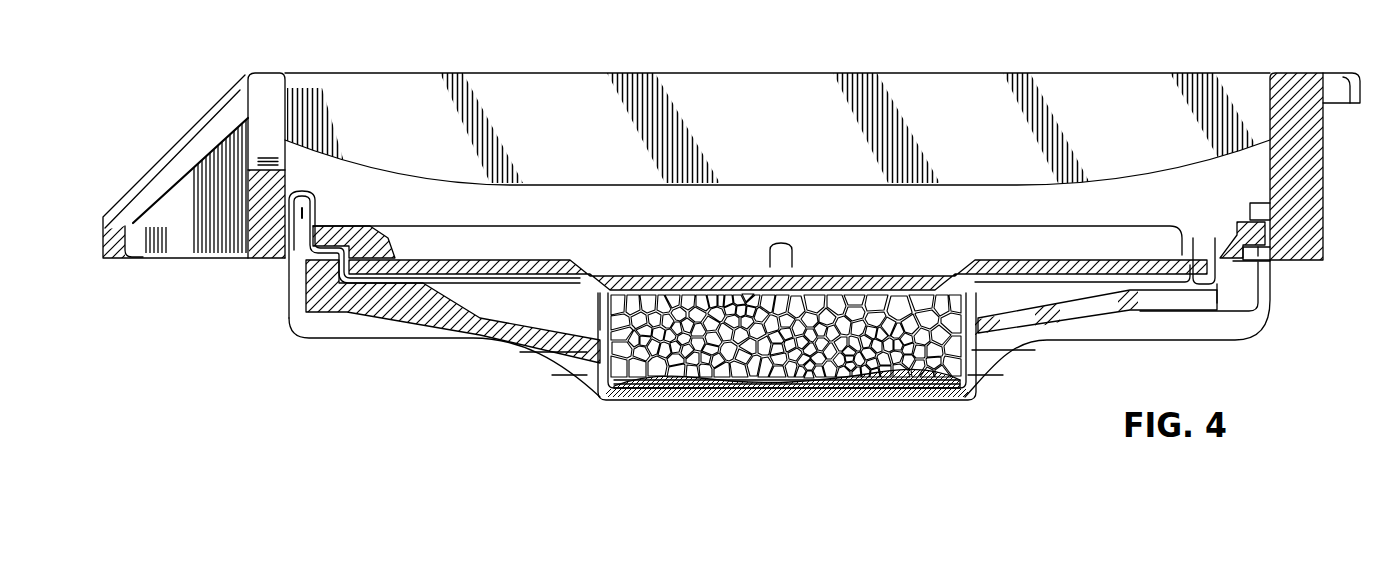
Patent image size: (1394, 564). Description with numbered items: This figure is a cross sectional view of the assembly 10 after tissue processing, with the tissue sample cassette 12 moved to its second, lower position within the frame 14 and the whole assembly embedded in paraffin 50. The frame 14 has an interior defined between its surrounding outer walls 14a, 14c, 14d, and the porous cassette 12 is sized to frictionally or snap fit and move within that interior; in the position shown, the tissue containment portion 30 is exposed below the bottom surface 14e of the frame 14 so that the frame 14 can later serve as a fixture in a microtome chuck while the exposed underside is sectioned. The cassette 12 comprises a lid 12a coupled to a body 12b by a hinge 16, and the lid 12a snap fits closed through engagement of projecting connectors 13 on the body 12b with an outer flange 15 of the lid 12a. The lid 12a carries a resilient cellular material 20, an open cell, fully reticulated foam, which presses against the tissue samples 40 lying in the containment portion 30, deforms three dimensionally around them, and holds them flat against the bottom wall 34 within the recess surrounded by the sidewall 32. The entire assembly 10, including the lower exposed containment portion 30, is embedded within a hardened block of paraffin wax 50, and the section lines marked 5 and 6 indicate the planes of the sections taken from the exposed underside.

The assembly 10 is at (1340, 50).
The tissue sample cassette 12 is at (336, 316).
The lid 12a is at (677, 278).
The body 12b is at (480, 314).
The projecting connectors 13 is at (1220, 233).
The frame 14 is at (1281, 71).
The outer wall 14a is at (180, 152).
The outer wall 14c is at (1323, 173).
The outer wall 14d is at (415, 110).
The bottom surface 14e is at (282, 292).
The outer flange 15 is at (1203, 270).
The hinge 16 is at (263, 93).
The resilient cellular material 20 is at (813, 300).
The tissue containment portion 30 is at (933, 367).
The sidewall 32 is at (598, 362).
The bottom wall 34 is at (833, 393).
The tissue samples 40 is at (660, 387).
The paraffin 50 is at (790, 190).
The section line 5 is at (520, 350).
The section line 6 is at (552, 373).